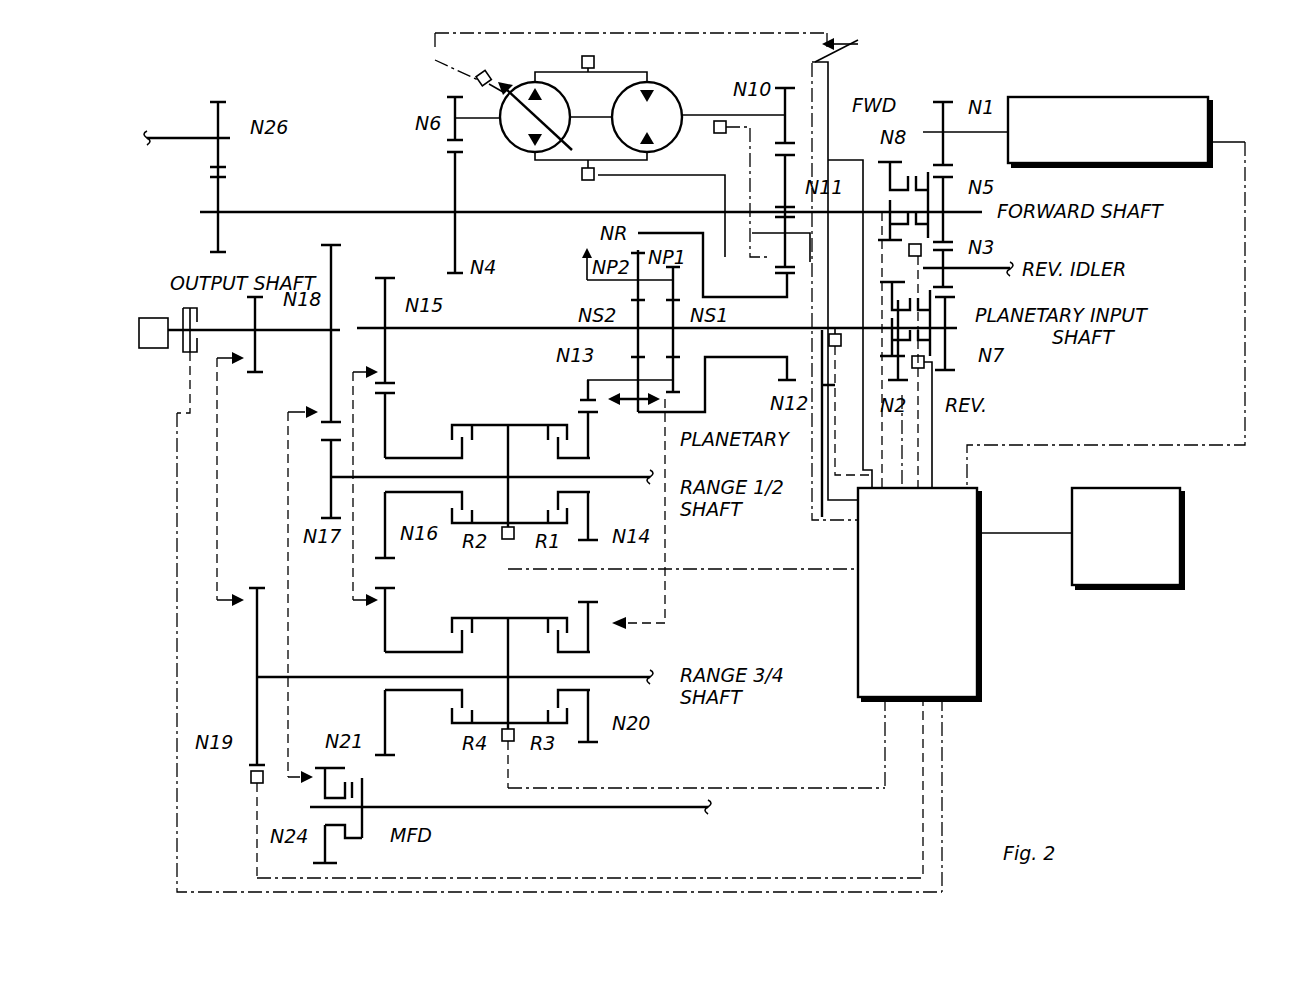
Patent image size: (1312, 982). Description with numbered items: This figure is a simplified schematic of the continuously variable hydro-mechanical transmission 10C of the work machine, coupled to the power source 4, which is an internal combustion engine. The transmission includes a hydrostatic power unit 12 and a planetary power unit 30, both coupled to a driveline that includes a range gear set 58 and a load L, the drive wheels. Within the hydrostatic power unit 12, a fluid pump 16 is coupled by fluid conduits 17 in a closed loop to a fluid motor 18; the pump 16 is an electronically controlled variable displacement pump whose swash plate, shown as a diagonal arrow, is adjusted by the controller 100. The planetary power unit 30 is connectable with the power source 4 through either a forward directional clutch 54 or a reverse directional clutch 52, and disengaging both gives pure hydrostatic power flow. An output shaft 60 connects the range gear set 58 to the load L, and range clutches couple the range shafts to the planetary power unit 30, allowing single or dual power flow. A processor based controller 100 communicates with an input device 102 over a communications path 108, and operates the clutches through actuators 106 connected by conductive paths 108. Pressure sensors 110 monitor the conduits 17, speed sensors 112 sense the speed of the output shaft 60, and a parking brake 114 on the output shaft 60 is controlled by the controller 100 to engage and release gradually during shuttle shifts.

The power source 4 is at (1210, 118).
The transmission 10C is at (992, 60).
The hydrostatic power unit 12 is at (428, 60).
The fluid pump 16 is at (522, 146).
The fluid conduits 17 is at (645, 78).
The fluid motor 18 is at (668, 104).
The planetary power unit 30 is at (540, 344).
The reverse directional clutch 52 is at (958, 340).
The forward directional clutch 54 is at (912, 178).
The range gear set 58 is at (718, 598).
The output shaft 60 is at (295, 342).
The controller 100 is at (980, 652).
The input device 102 is at (1182, 562).
The actuators 106 is at (470, 80).
The conductive paths 108 is at (177, 668).
The pressure sensors 110 is at (552, 194).
The speed sensors 112 is at (712, 130).
The parking brake 114 is at (198, 316).